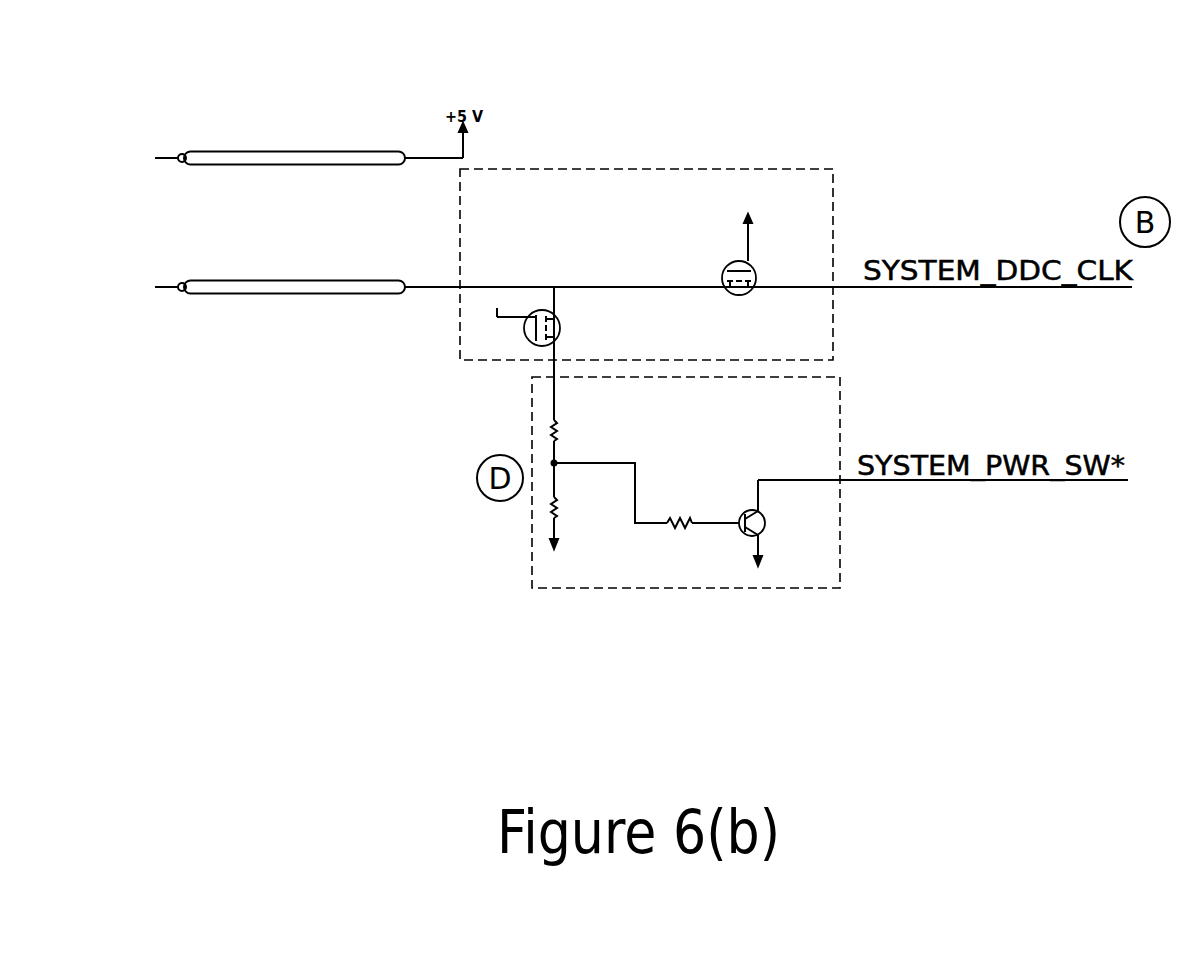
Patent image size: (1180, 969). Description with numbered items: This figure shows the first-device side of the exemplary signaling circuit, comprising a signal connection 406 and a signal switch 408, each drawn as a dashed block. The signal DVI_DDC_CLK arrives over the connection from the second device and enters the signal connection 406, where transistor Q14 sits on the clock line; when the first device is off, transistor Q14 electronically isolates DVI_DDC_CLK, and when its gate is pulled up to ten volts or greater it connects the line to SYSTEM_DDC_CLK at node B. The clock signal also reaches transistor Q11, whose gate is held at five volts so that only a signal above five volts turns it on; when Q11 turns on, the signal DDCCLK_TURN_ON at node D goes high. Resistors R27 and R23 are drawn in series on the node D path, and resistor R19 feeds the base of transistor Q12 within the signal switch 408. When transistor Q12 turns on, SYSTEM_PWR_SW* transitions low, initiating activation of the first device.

The signal connection 406 is at (646, 205).
The signal switch 408 is at (830, 548).
The transistor Q11 is at (561, 332).
The transistor Q14 is at (705, 254).
The transistor Q12 is at (784, 523).
The resistor R27 (680 ohm) R27 is at (584, 418).
The resistor R23 (330 ohm) R23 is at (584, 493).
The resistor R19 (10K ohm) R19 is at (680, 519).